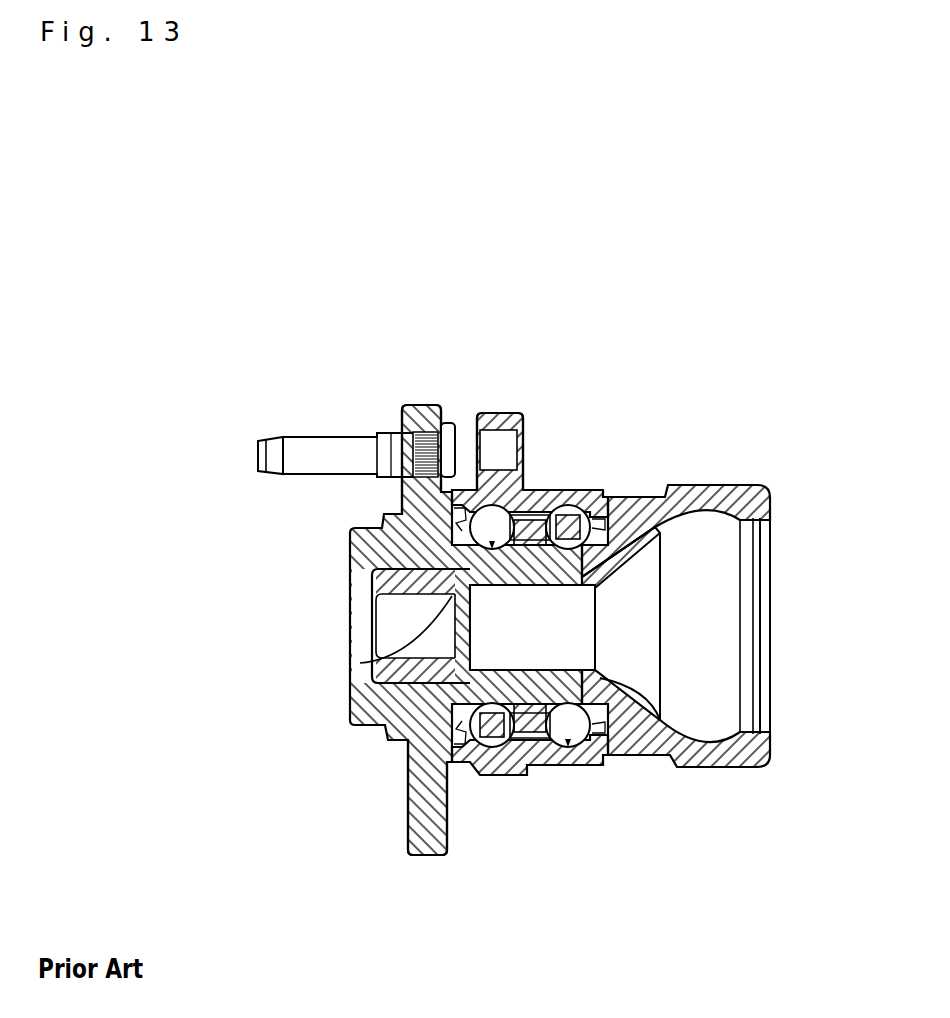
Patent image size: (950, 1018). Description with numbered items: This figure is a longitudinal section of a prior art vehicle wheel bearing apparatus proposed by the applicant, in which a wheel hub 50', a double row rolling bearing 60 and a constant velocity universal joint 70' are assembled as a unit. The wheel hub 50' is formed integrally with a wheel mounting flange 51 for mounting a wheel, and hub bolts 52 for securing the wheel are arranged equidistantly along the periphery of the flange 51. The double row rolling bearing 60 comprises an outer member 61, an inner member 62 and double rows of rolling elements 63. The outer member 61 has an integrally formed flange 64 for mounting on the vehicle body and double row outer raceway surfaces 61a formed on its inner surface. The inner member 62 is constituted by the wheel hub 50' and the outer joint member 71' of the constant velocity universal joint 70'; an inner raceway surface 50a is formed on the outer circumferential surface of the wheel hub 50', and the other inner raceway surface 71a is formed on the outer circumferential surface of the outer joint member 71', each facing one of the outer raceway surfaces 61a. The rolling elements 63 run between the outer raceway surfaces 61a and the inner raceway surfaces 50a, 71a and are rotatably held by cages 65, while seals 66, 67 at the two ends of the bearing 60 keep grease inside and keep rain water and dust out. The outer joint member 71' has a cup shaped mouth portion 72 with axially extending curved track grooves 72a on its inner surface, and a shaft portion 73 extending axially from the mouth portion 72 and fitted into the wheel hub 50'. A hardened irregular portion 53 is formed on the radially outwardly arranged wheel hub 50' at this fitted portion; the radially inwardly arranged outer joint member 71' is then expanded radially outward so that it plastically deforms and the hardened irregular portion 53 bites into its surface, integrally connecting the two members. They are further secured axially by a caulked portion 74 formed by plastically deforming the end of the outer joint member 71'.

The wheel hub 50' is at (431, 630).
The inner raceway surface 50a is at (375, 620).
The wheel mounting flange 51 is at (415, 410).
The hub bolts 52 is at (300, 445).
The hardened irregular portion 53 is at (395, 607).
The double row rolling bearing 60 is at (566, 608).
The outer member 61 is at (550, 608).
The outer raceway surfaces 61a is at (490, 752).
The inner member 62 is at (407, 748).
The rolling elements 63 is at (468, 512).
The flange 64 is at (488, 413).
The cages 65 is at (598, 500).
The seal 66 is at (412, 800).
The seal 67 is at (618, 730).
The outer joint member 70' is at (654, 619).
The outer joint member 71' is at (656, 564).
The inner raceway surface 71a is at (597, 589).
The mouth portion 72 is at (770, 503).
The track grooves 72a is at (722, 478).
The shaft portion 73 is at (660, 722).
The caulked portion 74 is at (372, 577).